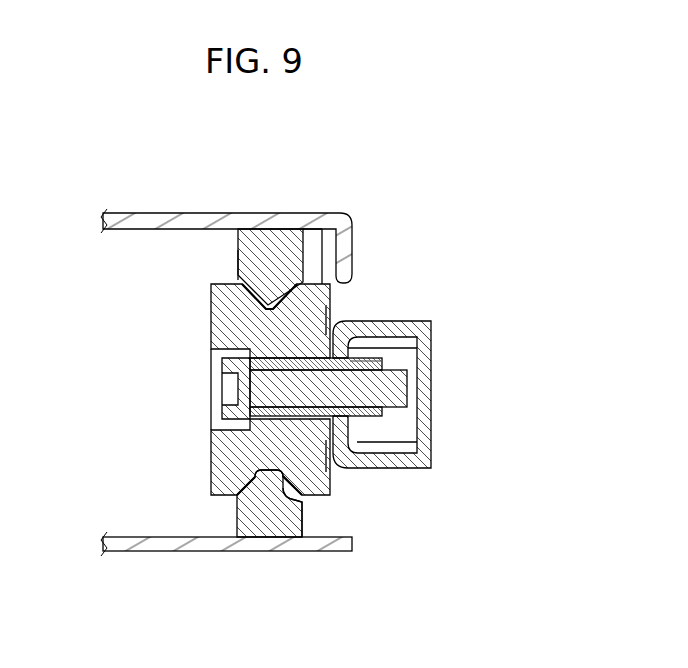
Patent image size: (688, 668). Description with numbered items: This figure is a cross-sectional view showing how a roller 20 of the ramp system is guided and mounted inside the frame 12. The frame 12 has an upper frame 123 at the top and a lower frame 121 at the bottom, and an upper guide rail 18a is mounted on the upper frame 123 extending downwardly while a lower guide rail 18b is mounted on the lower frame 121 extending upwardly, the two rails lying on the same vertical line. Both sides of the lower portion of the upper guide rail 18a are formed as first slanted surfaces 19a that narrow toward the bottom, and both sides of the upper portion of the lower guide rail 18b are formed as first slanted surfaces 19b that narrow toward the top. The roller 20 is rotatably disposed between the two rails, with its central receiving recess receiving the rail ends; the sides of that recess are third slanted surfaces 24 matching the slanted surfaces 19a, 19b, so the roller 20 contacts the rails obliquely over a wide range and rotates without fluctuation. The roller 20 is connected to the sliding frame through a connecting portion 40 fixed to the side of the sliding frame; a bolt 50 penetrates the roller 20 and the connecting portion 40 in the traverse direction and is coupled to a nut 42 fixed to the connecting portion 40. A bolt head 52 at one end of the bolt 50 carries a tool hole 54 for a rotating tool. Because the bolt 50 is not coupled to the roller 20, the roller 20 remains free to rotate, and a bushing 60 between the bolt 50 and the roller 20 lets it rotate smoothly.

The frame 12 is at (226, 211).
The upper frame 123 is at (203, 221).
The lower frame 121 is at (178, 552).
The upper guide rail 18a is at (270, 250).
The lower guide rail 18b is at (278, 520).
The first slanted surfaces 19a is at (322, 231).
The first slanted surfaces 19b is at (302, 513).
The roller 20 is at (192, 326).
The third slanted surfaces 24 is at (238, 267).
The connecting portion 40 is at (414, 383).
The nut 42 is at (363, 411).
The bolt 50 is at (388, 388).
The bolt head 52 is at (221, 369).
The tool hole 54 is at (232, 388).
The bushing 60 is at (330, 313).